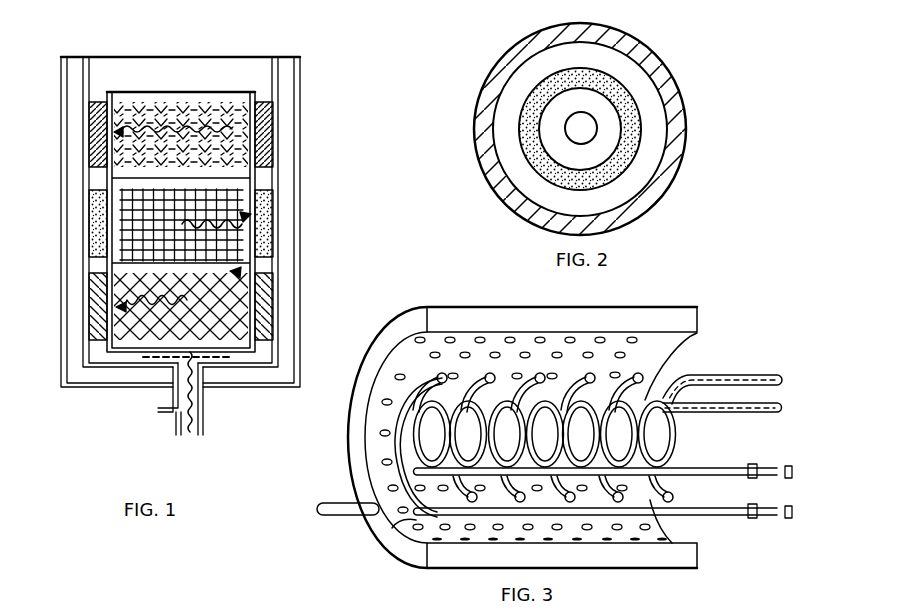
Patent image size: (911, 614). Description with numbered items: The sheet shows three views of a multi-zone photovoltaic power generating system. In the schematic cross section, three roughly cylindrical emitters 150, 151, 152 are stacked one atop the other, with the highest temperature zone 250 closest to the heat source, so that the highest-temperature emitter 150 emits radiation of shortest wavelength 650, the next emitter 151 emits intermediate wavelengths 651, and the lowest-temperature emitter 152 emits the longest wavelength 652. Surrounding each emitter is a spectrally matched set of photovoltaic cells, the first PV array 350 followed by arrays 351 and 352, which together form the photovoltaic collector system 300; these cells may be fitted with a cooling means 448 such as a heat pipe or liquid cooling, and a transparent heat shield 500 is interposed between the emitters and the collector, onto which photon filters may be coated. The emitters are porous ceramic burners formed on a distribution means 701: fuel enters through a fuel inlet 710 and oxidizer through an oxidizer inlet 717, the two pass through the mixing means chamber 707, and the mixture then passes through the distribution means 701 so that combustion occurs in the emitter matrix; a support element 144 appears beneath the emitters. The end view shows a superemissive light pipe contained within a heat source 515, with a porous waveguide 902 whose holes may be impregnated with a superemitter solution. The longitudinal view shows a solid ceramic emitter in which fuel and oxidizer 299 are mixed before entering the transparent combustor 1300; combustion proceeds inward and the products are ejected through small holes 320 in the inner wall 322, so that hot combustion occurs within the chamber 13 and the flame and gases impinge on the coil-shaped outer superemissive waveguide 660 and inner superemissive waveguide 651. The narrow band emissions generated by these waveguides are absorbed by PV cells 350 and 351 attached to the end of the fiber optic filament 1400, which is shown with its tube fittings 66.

In FIG. 1, the photovoltaic collector system 300 is at (100, 358).
In FIG. 1, the cooling means 448 is at (63, 366).
In FIG. 1, the transparent heat shield 500 is at (107, 90).
In FIG. 1, the support screen 144 is at (233, 357).
In FIG. 1, the emitter 152 is at (233, 130).
In FIG. 2, the emitter 152 is at (577, 120).
In FIG. 1, the radiation with longest wavelength 652 is at (167, 100).
In FIG. 1, the emitter 151 is at (233, 240).
In FIG. 2, the emitter 151 is at (605, 135).
In FIG. 3, the emitter 151 is at (500, 403).
In FIG. 1, the radiation with intermediate wavelengths 651 is at (242, 206).
In FIG. 3, the radiation with intermediate wavelengths 651 is at (712, 413).
In FIG. 1, the emitter 150 is at (230, 308).
In FIG. 2, the emitter 150 is at (633, 97).
In FIG. 3, the emitter 150 is at (430, 378).
In FIG. 1, the radiation with shortest wavelength 650 is at (120, 323).
In FIG. 1, the highest temperature zone 250 is at (238, 274).
In FIG. 1, the PV array 352 is at (90, 120).
In FIG. 1, the PV array 351 is at (92, 200).
In FIG. 3, the PV array 351 is at (793, 470).
In FIG. 1, the PV array 350 is at (100, 290).
In FIG. 3, the PV array 350 is at (793, 508).
In FIG. 1, the fuel inlet 710 is at (163, 410).
In FIG. 1, the mixing means chamber 707 is at (176, 420).
In FIG. 1, the distribution means 701 is at (153, 360).
In FIG. 1, the oxidizer inlet 717 is at (190, 432).
In FIG. 2, the heat source 515 is at (614, 40).
In FIG. 2, the porous waveguide 902 is at (620, 77).
In FIG. 3, the transparent combustor 1300 is at (677, 318).
In FIG. 3, the chamber 13 is at (655, 365).
In FIG. 3, the outer superemissive waveguide 660 is at (738, 370).
In FIG. 3, the fiber optic filament 1400 is at (763, 462).
In FIG. 3, the tube fitting 66 is at (755, 518).
In FIG. 3, the inner wall 322 is at (663, 527).
In FIG. 3, the small holes 320 is at (397, 523).
In FIG. 3, the fuel and oxidizer 299 is at (315, 511).